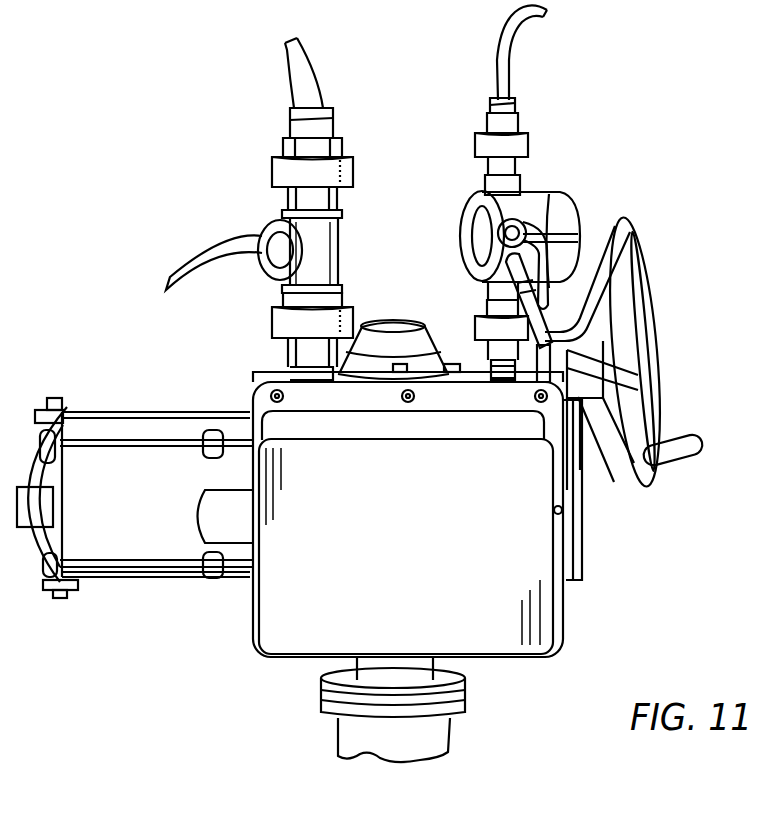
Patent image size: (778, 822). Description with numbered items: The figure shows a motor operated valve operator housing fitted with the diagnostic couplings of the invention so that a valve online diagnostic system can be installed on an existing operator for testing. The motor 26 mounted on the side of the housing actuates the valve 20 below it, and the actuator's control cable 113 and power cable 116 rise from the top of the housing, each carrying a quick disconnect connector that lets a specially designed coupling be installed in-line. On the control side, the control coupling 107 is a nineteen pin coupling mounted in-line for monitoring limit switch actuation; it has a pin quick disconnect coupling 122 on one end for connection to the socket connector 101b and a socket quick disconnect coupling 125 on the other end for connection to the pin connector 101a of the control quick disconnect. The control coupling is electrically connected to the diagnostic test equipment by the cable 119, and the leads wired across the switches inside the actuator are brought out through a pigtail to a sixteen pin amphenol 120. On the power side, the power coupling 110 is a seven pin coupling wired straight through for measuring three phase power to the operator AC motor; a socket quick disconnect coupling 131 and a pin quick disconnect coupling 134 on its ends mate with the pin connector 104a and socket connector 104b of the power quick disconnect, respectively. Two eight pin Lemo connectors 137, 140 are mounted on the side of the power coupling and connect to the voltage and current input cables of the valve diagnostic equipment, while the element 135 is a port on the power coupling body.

The valve 20 is at (355, 739).
The motor 26 is at (134, 430).
The pin connector 101a is at (274, 172).
The socket connector 101b is at (302, 353).
The pin connector 104a is at (529, 148).
The socket connector 104b is at (478, 326).
The control coupling 107 is at (325, 257).
The power coupling 110 is at (526, 200).
The control cable 113 is at (308, 76).
The power cable 116 is at (510, 23).
The cable 119 is at (190, 268).
The sixteen pin amphenol 120 is at (268, 240).
The pin quick disconnect coupling 122 is at (274, 328).
The socket quick disconnect coupling 125 is at (330, 203).
The socket quick disconnect coupling 131 is at (496, 165).
The pin quick disconnect coupling 134 is at (488, 305).
The valve port 135 is at (498, 236).
The eight pin Lemo connector 137 is at (584, 272).
The eight pin Lemo connector 140 is at (548, 319).